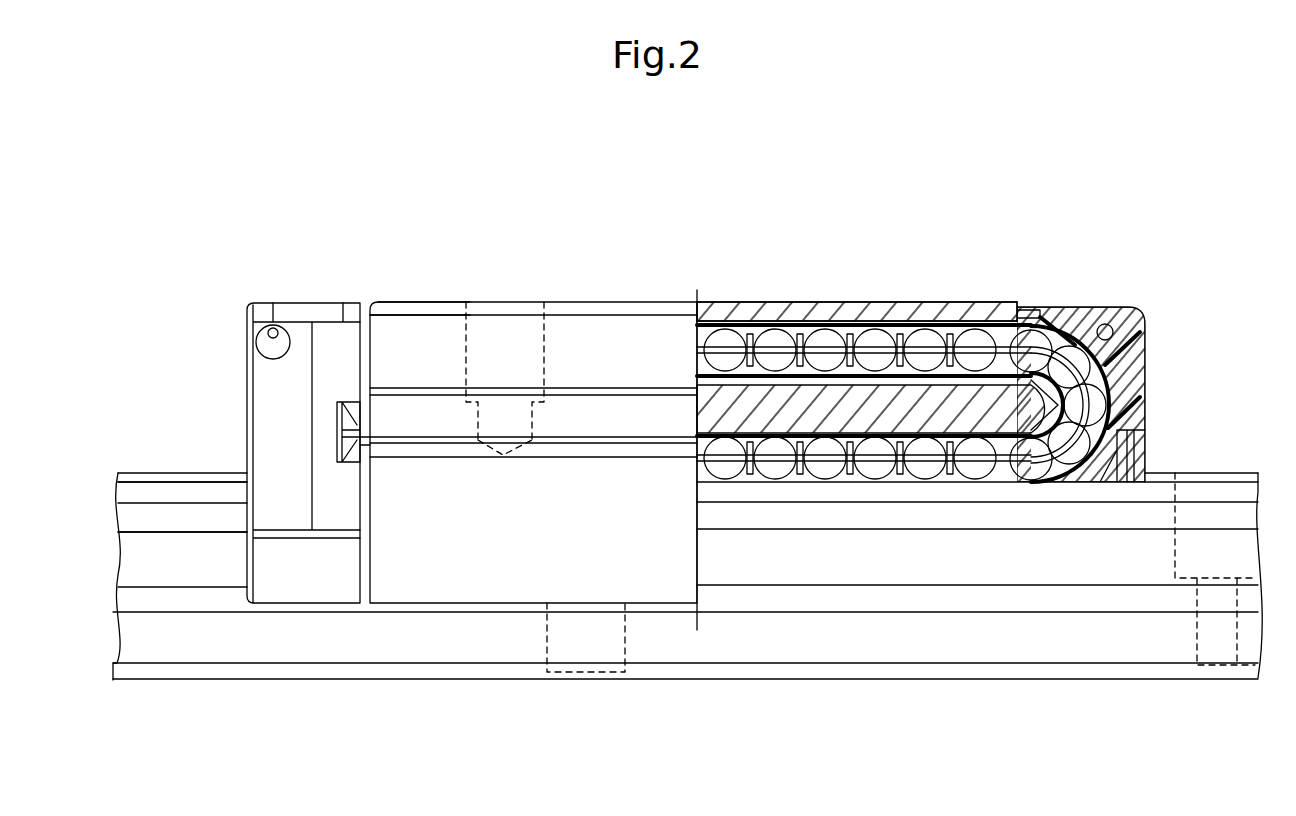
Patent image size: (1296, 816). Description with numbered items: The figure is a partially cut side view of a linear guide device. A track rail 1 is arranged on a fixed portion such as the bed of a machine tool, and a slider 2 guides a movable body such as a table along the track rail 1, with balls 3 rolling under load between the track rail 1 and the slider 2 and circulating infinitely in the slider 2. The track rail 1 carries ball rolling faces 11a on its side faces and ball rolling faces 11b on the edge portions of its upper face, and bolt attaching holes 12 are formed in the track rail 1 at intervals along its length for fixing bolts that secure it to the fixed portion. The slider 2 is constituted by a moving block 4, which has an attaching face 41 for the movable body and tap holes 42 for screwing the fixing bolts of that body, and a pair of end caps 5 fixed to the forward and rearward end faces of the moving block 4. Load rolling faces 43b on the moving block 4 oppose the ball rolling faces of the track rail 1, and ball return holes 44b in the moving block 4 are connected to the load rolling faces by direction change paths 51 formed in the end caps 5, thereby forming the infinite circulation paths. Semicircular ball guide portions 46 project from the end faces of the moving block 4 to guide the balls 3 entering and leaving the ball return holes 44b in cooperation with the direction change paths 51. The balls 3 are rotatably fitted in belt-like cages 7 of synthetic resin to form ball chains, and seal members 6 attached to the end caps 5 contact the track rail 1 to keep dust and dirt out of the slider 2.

The track rail 1 is at (116, 461).
The ball rolling face 11a is at (193, 515).
The ball rolling face 11b is at (181, 478).
The bolt attaching hole 12 is at (547, 625).
The slider 2 is at (306, 288).
The ball 3 is at (825, 325).
The moving block 4 is at (707, 407).
The attaching face 41 is at (403, 300).
The tap hole 42 is at (526, 342).
The load rolling face 43b is at (972, 425).
The ball return hole 44b is at (927, 320).
The ball guide portion 46 is at (1043, 385).
The end cap 5 is at (684, 418).
The direction change path 51 is at (1130, 330).
The seal member 6 is at (1148, 443).
The belt-like cage 7 is at (737, 312).